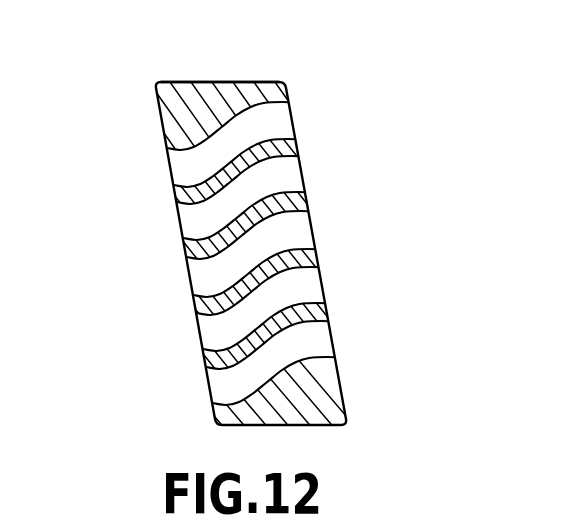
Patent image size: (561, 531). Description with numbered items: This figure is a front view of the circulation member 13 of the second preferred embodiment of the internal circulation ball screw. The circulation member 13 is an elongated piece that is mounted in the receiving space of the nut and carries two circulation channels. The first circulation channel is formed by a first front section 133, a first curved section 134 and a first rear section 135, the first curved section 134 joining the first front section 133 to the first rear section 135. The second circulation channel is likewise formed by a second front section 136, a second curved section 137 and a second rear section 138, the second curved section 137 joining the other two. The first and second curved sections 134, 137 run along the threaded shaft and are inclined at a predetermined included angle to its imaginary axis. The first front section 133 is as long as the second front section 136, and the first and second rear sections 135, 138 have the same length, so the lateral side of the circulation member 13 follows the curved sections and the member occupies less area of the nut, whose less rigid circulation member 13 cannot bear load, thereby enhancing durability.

The circulation member 13 is at (148, 89).
The first front section 133 is at (183, 150).
The first curved section 134 is at (290, 112).
The first rear section 135 is at (258, 90).
The second front section 136 is at (173, 197).
The second curved section 137 is at (293, 168).
The second rear section 138 is at (296, 150).